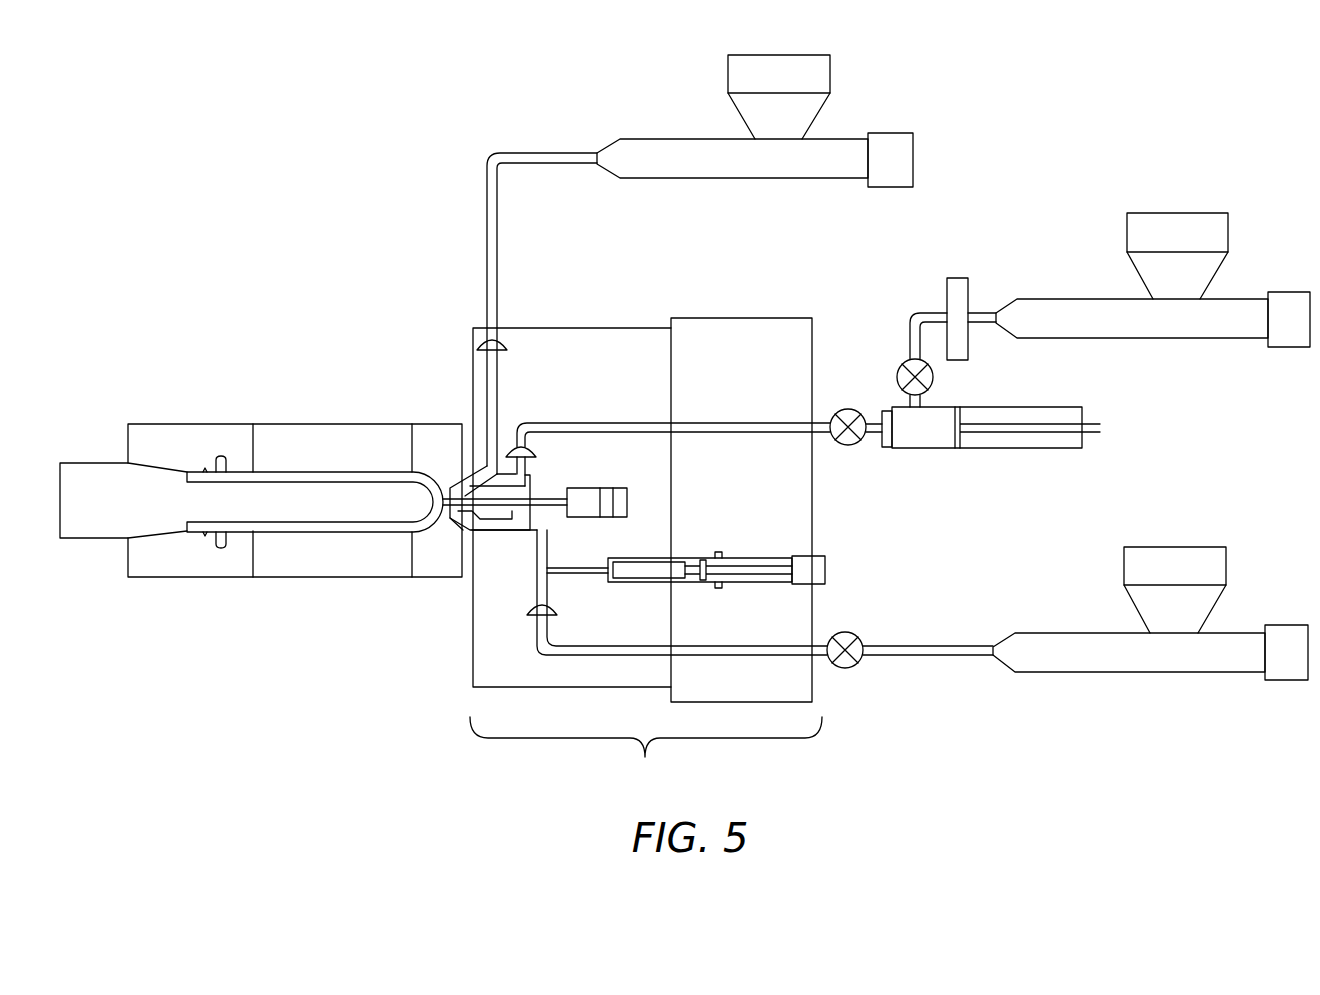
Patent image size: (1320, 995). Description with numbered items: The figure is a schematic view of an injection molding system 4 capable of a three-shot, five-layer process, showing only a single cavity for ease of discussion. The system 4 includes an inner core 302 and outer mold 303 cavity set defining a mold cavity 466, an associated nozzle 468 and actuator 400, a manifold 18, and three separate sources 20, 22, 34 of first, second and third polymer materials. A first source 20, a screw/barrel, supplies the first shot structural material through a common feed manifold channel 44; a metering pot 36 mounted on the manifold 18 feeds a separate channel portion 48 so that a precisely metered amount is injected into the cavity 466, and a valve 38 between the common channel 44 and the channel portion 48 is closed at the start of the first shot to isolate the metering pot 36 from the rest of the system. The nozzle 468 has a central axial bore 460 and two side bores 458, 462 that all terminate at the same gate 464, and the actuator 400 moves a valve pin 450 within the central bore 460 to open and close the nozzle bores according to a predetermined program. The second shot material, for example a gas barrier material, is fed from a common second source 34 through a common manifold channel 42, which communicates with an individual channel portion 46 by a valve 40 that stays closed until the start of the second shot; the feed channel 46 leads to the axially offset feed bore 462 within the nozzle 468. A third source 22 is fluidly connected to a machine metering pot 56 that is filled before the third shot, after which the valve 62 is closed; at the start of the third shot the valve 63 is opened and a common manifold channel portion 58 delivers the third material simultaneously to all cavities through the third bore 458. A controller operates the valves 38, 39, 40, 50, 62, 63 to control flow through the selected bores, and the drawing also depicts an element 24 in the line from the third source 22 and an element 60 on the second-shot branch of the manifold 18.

The injection molding system 4 is at (357, 143).
The manifold 18 is at (646, 557).
The first source 20 is at (1057, 633).
The third source 22 is at (1110, 338).
The static mixer 24 is at (960, 278).
The second source 34 is at (690, 178).
The metering pot 36 is at (655, 582).
The valve 38 is at (528, 613).
The valve 39 is at (850, 633).
The valve 40 is at (505, 345).
The common manifold channel 42 is at (487, 210).
The common feed manifold channel 44 is at (785, 645).
The channel portion 46 is at (497, 390).
The channel portion 48 is at (548, 556).
The valve 50 is at (508, 432).
The machine metering pot 56 is at (932, 450).
The common manifold channel portion 58 is at (692, 418).
The valve 60 is at (528, 460).
The valve 62 is at (898, 370).
The valve 63 is at (848, 447).
The inner core 302 is at (121, 487).
The outer mold 303 is at (240, 428).
The actuator 400 is at (630, 485).
The valve pin 450 is at (563, 493).
The third bore 458 is at (502, 530).
The central axial bore 460 is at (455, 527).
The axially offset feed bore 462 is at (471, 482).
The gate 464 is at (463, 520).
The mold cavity 466 is at (268, 524).
The nozzle 468 is at (455, 478).